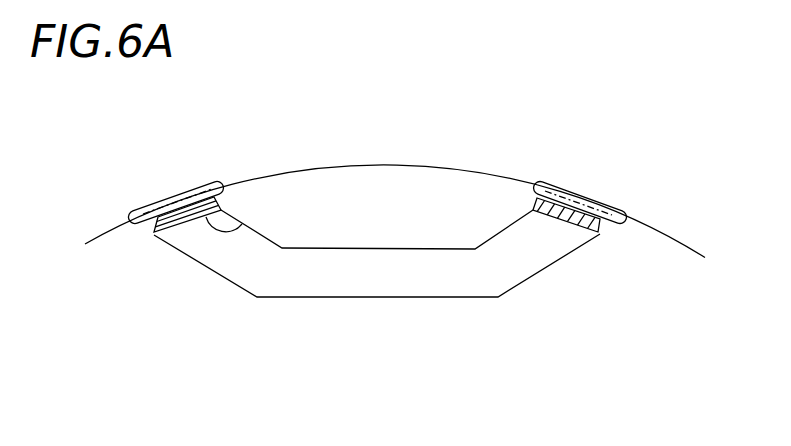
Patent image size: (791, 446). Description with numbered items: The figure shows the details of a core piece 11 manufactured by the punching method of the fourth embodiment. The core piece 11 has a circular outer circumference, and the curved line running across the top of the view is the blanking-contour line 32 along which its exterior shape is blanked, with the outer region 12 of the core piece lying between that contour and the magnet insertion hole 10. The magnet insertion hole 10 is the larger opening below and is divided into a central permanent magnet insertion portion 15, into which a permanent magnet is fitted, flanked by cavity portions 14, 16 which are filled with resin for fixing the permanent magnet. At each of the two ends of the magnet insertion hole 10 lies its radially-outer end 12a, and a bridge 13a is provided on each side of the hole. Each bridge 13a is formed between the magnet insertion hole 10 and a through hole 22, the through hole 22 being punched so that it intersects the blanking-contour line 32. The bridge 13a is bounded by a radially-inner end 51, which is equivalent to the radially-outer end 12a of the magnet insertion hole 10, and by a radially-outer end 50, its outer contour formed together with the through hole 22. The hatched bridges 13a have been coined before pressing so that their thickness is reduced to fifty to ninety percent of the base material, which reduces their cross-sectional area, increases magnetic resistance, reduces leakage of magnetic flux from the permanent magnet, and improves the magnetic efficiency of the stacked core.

The magnet insertion hole 10 is at (310, 385).
The core piece 11 is at (447, 167).
The outer region 12 is at (357, 147).
The radially-outer end 12a is at (178, 228).
The bridge 13a is at (196, 213).
The cavity portion 14 is at (232, 268).
The permanent magnet insertion portion 15 is at (376, 282).
The cavity portion 16 is at (503, 268).
The through hole 22 is at (142, 214).
The blanking-contour line 32 is at (660, 232).
The radially-outer end 50 is at (167, 205).
The radially-inner end 51 is at (247, 220).